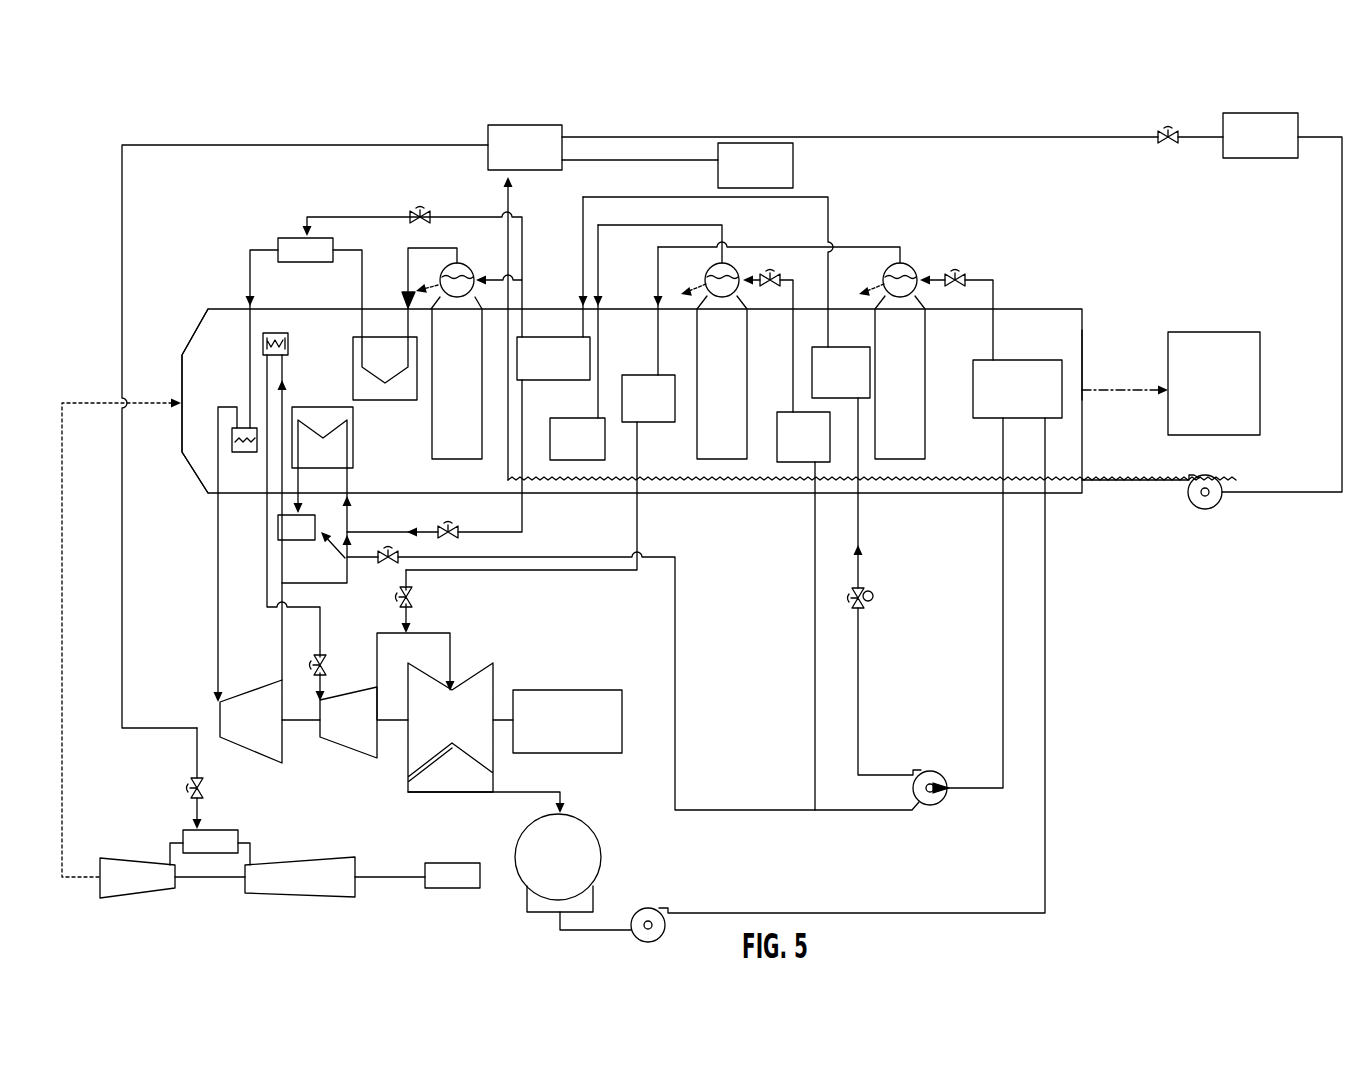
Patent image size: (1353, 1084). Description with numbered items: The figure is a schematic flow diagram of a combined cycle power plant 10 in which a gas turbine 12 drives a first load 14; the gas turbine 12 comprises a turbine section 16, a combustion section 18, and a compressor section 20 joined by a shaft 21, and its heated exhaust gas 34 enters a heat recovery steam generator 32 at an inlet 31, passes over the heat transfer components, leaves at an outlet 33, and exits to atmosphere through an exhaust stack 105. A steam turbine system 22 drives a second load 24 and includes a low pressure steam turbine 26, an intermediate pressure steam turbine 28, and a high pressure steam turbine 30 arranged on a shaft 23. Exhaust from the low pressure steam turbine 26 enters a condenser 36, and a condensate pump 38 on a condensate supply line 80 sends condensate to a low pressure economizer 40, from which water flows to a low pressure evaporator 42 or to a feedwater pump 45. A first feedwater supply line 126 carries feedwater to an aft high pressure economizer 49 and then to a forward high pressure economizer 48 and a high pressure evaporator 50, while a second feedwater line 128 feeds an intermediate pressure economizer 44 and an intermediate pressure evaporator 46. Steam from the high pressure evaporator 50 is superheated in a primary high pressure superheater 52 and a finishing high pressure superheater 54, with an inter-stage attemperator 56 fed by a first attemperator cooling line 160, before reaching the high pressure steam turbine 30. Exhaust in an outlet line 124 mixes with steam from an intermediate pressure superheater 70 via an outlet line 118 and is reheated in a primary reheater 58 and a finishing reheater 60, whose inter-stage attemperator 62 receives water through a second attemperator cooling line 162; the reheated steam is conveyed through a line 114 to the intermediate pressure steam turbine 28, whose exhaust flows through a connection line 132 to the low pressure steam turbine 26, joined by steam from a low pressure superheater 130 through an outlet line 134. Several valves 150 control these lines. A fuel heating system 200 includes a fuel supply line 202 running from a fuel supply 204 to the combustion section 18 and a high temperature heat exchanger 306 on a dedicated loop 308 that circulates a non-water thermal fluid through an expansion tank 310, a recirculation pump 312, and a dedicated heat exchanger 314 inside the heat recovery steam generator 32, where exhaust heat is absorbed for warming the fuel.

The combined cycle power plant 10 is at (1240, 81).
The gas turbine 12 is at (152, 913).
The first load 14 is at (463, 864).
The turbine section 16 is at (135, 858).
The combustion section 18 is at (209, 830).
The compressor section 20 is at (304, 865).
The shaft 21 is at (215, 878).
The steam turbine system 22 is at (499, 634).
The shaft 23 is at (502, 717).
The second load 24 is at (568, 690).
The low pressure steam turbine 26 is at (412, 750).
The intermediate pressure steam turbine 28 is at (352, 751).
The high pressure steam turbine 30 is at (256, 758).
The inlet 31 is at (182, 377).
The heat recovery steam generator 32 is at (1035, 309).
The outlet 33 is at (1082, 345).
The exhaust gas 34 is at (64, 773).
The condenser 36 is at (601, 858).
The condensate pump 38 is at (659, 935).
The low pressure economizer 40 is at (972, 364).
The low pressure evaporator 42 is at (927, 442).
The intermediate pressure economizer 44 is at (815, 456).
The feedwater pump 45 is at (937, 772).
The intermediate pressure evaporator 46 is at (746, 455).
The forward high pressure economizer 48 is at (567, 374).
The aft high pressure economizer 49 is at (852, 389).
The high pressure evaporator 50 is at (432, 452).
The primary high pressure superheater 52 is at (382, 337).
The finishing high pressure superheater 54 is at (236, 453).
The inter-stage attemperator 56 is at (305, 262).
The primary reheater 58 is at (300, 407).
The finishing reheater 60 is at (288, 342).
The inter-stage attemperator 62 is at (285, 540).
The intermediate pressure superheater 70 is at (588, 454).
The condensate supply line 80 is at (921, 913).
The exhaust stack 105 is at (1235, 407).
The intermediate pressure steam line 114 is at (321, 645).
The outlet line 118 is at (524, 522).
The outlet line 124 is at (279, 661).
The first feedwater supply line 126 is at (860, 683).
The second feedwater line 128 is at (813, 617).
The low pressure superheater 130 is at (665, 414).
The connection line 132 is at (428, 633).
The outlet line 134 is at (640, 534).
The valve 150 is at (1165, 146).
The first attemperator cooling line 160 is at (307, 217).
The second attemperator cooling line 162 is at (676, 720).
The fuel heating system 200 is at (638, 105).
The fuel supply line 202 is at (218, 145).
The fuel supply 204 is at (773, 184).
The high temperature heat exchanger 306 is at (543, 166).
The dedicated loop 308 is at (1012, 137).
The expansion tank 310 is at (1275, 152).
The recirculation pump 312 is at (1213, 503).
The dedicated heat exchanger 314 is at (930, 487).